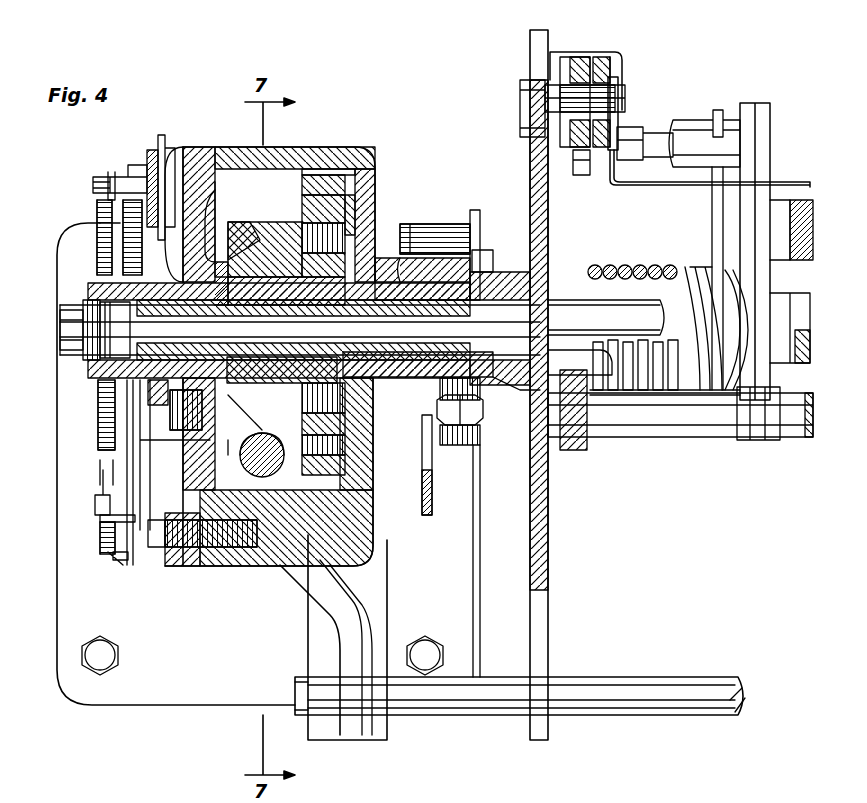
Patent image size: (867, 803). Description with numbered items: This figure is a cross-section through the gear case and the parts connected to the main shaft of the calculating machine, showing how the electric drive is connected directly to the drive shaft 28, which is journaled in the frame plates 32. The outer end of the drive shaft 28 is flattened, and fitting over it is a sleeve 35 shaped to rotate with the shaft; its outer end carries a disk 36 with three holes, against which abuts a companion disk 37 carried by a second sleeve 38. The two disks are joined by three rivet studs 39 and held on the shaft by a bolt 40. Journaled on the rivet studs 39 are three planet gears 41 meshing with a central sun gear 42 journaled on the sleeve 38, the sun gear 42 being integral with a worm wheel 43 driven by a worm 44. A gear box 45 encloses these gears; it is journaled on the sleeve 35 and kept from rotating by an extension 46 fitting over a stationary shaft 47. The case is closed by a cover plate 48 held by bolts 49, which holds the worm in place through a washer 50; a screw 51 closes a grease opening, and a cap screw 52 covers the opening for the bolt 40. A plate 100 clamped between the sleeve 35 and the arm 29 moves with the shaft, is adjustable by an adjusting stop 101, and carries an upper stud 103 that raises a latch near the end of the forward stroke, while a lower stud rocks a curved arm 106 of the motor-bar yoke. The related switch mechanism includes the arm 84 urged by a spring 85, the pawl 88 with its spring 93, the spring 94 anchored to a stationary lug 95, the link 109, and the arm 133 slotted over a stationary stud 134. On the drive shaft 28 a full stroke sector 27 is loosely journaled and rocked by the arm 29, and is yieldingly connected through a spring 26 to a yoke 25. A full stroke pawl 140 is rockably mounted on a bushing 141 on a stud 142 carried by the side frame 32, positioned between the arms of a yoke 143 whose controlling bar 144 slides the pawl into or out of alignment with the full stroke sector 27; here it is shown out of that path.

The yoke 25 is at (806, 260).
The spring 26 is at (712, 235).
The full stroke sector 27 is at (565, 205).
The drive shaft 28 is at (568, 300).
The arm 29 is at (482, 255).
The frame plate 32 is at (531, 45).
The sleeve 35 is at (383, 258).
The disk 36 is at (352, 212).
The companion disk 37 is at (363, 178).
The sleeve 38 is at (150, 325).
The rivet stud 39 is at (310, 275).
The bolt 40 is at (160, 405).
The planet gear 41 is at (310, 205).
The sun gear 42 is at (262, 235).
The worm wheel 43 is at (240, 235).
The worm 44 is at (230, 440).
The gear box 45 is at (352, 150).
The extension 46 is at (313, 660).
The stationary shaft 47 is at (410, 715).
The cover plate 48 is at (196, 148).
The bolt 49 is at (165, 553).
The washer 50 is at (175, 460).
The screw 51 is at (182, 430).
The cap screw 52 is at (68, 312).
The arm 84 is at (125, 562).
The spring 85 is at (97, 215).
The pawl 88 is at (130, 565).
The spring 93 is at (114, 175).
The spring 94 is at (100, 468).
The stationary lug 95 is at (100, 520).
The plate 100 is at (474, 210).
The adjusting stop 101 is at (482, 432).
The upper stud 103 is at (425, 225).
The curved arm 106 is at (424, 428).
The link 109 is at (97, 505).
The arm 133 is at (162, 150).
The stationary stud 134 is at (122, 177).
The full stroke pawl 140 is at (582, 175).
The bushing 141 is at (562, 56).
The stud 142 is at (618, 100).
The yoke 143 is at (575, 55).
The controlling bar 144 is at (702, 186).